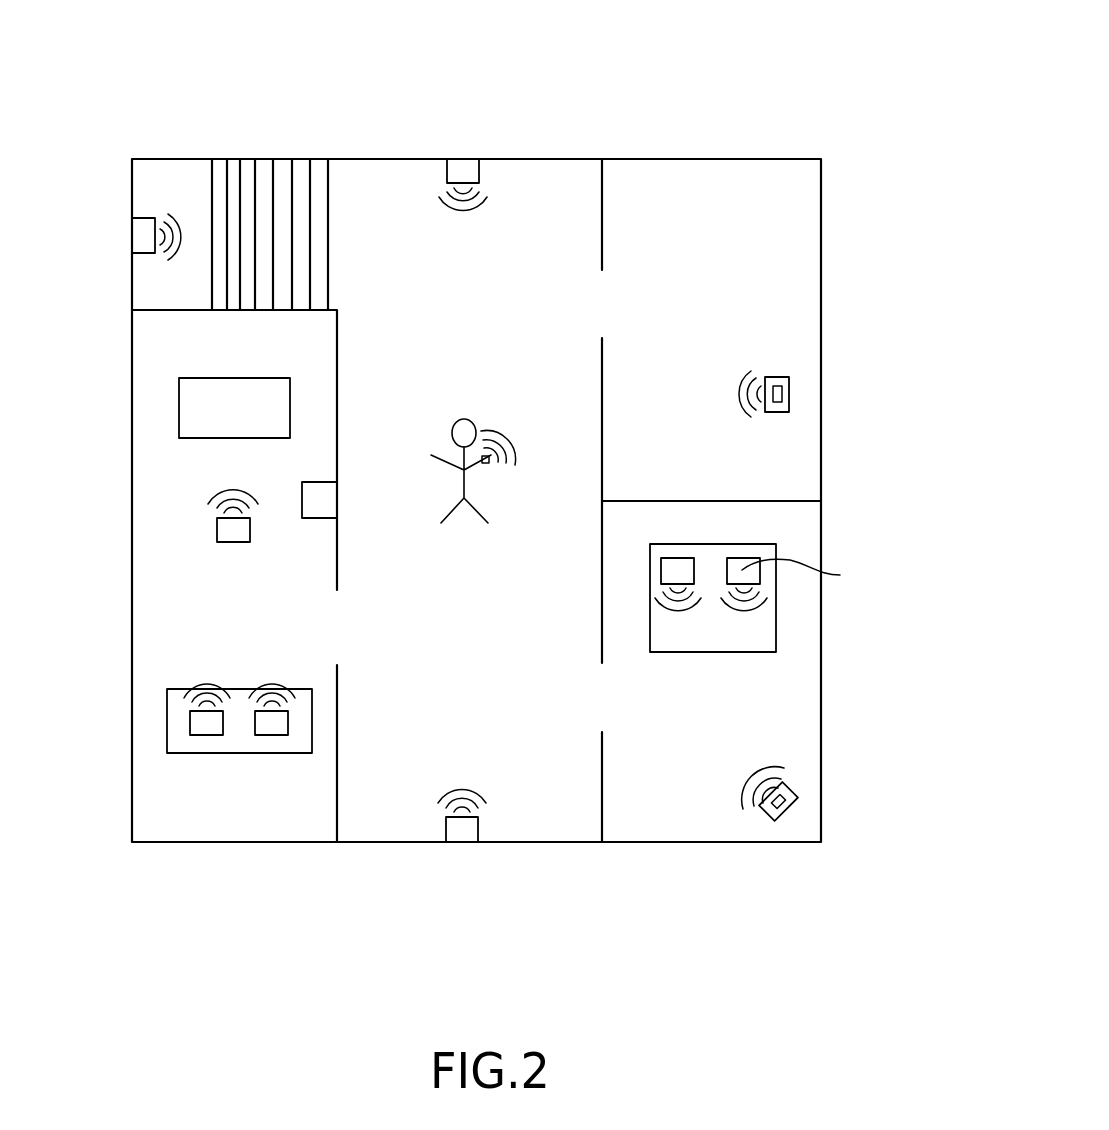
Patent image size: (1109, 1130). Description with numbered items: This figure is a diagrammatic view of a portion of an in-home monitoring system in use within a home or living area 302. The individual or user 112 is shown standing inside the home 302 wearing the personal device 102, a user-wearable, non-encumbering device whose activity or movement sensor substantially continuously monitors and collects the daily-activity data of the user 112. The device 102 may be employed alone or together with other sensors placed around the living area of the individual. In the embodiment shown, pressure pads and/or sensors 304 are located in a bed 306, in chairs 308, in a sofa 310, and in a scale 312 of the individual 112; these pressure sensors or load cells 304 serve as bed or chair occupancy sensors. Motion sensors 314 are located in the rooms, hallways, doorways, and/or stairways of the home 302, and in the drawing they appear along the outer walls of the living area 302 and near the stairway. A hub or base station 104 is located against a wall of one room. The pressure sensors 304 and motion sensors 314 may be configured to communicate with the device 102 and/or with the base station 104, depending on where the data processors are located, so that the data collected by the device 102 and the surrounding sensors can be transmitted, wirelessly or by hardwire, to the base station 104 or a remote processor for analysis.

The home or living area 302 is at (708, 75).
The motion sensors 314 is at (465, 172).
The scale 312 is at (786, 385).
The bed 306 is at (688, 652).
The chairs 308 is at (236, 542).
The sofa 310 is at (167, 724).
The pressure pads and/or sensors 304 is at (270, 725).
The base station 104 is at (322, 518).
The user 112 is at (460, 488).
The personal device 102 is at (486, 466).